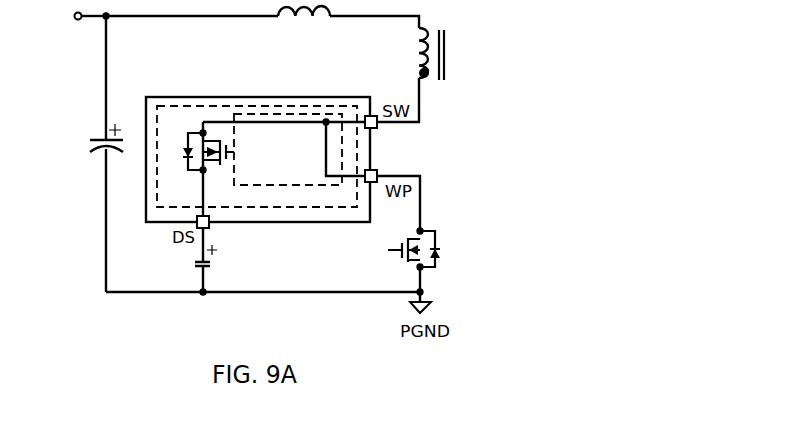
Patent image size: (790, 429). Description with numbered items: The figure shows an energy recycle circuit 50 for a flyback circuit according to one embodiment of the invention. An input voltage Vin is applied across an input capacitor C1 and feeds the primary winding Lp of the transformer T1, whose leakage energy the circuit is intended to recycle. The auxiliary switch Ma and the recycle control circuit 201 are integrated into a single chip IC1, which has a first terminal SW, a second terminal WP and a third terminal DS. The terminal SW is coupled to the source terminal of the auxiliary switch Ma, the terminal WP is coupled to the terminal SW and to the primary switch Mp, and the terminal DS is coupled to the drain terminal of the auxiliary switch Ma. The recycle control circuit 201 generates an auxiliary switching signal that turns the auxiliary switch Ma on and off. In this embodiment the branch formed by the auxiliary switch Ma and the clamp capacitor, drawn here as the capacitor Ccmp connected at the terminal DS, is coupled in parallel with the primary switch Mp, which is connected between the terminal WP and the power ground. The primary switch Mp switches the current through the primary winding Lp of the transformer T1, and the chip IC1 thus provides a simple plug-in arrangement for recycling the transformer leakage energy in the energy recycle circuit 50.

The energy recycle circuit 50 is at (186, 130).
The recycle control circuit 201 is at (300, 186).
The chip IC1 is at (318, 97).
The auxiliary switch Ma is at (200, 162).
The primary switch Mp is at (428, 249).
The input capacitor C1 is at (94, 139).
The compensation capacitor Ccmp is at (182, 260).
The transformer T1 is at (424, 42).
The primary winding Lp is at (412, 53).
The input voltage terminal Vin is at (74, 16).